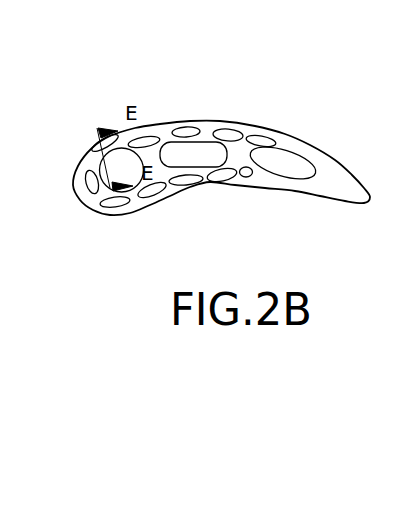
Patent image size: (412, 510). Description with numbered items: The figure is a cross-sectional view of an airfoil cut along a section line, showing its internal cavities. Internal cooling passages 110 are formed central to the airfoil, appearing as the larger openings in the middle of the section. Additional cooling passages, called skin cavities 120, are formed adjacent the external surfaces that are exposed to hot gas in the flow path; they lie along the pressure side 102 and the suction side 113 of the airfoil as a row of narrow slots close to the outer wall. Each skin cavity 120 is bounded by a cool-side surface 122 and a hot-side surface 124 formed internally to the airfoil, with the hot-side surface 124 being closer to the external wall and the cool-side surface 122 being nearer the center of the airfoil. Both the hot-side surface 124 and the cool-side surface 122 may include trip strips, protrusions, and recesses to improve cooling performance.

The pressure side 102 is at (193, 166).
The internal cooling passages 110 is at (305, 172).
The suction side 113 is at (160, 126).
The skin cavities 120 is at (266, 142).
The cool-side surface 122 is at (241, 143).
The hot-side surface 124 is at (230, 130).